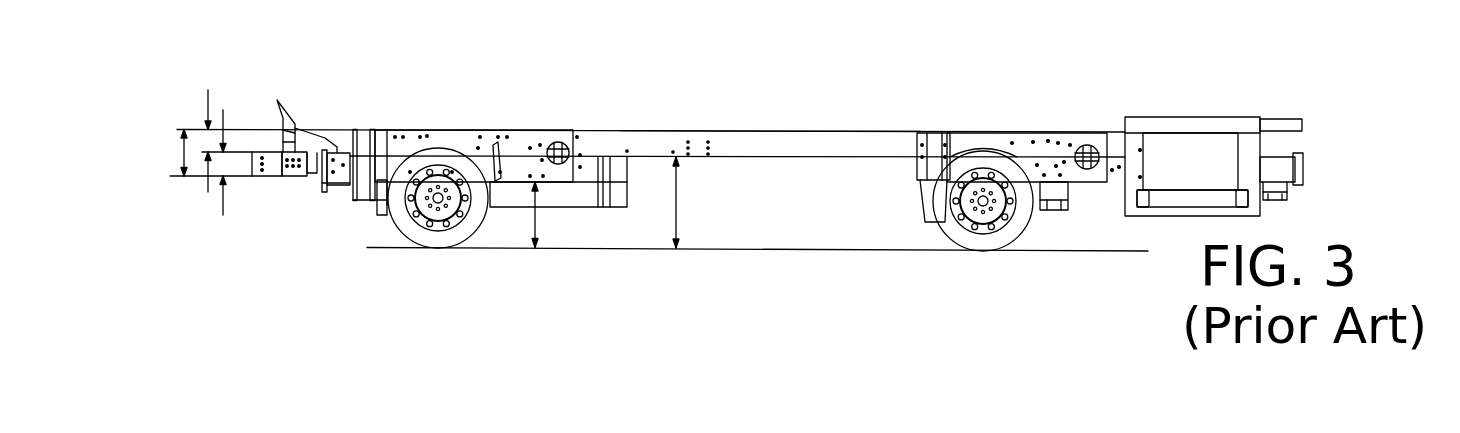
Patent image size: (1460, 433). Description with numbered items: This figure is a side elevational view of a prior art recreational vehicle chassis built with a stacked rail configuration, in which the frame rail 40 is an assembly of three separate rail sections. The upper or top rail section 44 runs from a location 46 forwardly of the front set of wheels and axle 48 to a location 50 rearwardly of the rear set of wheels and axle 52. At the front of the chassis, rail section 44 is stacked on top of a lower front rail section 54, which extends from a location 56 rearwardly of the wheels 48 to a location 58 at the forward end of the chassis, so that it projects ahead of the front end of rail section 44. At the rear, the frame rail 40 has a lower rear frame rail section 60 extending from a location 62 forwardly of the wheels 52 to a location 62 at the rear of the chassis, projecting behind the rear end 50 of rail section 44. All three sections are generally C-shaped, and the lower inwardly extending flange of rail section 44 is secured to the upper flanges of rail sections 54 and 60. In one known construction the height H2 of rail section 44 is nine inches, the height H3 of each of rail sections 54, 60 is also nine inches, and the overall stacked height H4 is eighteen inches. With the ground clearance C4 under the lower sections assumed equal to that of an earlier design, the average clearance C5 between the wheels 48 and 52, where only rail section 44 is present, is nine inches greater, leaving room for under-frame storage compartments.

The frame rail 40 is at (791, 162).
The upper or top rail section 44 is at (772, 137).
The location forwardly of the front wheels and axle 46 is at (343, 130).
The front wheels and axle 48 is at (452, 258).
The location rearwardly of the rear wheels and axle 50 is at (1113, 137).
The rear wheels and axle 52 is at (1003, 266).
The lower front rail section 54 is at (517, 158).
The location rearwardly of the front wheels 56 is at (593, 158).
The location at the forward end of the chassis 58 is at (242, 152).
The lower rear frame rail section 60 is at (1030, 153).
The end location of the lower rear rail section 62 is at (933, 197).
The height of rail section 44 H2 is at (207, 140).
The height of rail sections 54, 60 H3 is at (223, 162).
The overall height of the stacked rail sections H4 is at (182, 147).
The clearance C4 is at (536, 218).
The average clearance between the wheels C5 is at (677, 218).